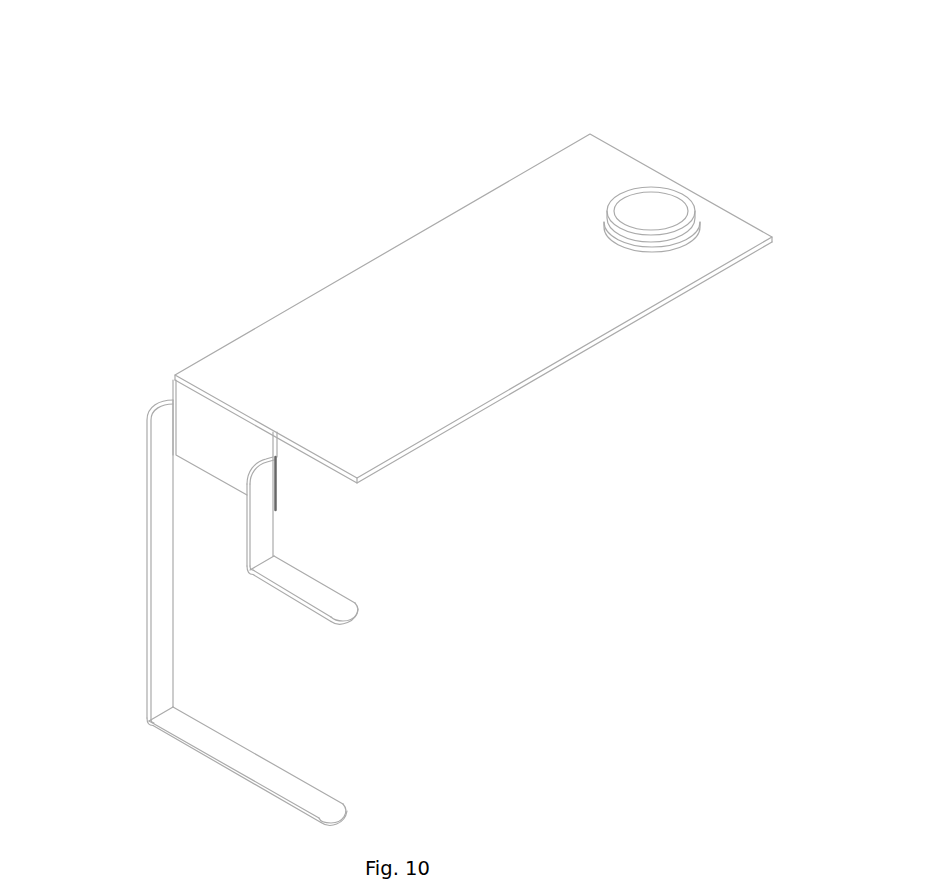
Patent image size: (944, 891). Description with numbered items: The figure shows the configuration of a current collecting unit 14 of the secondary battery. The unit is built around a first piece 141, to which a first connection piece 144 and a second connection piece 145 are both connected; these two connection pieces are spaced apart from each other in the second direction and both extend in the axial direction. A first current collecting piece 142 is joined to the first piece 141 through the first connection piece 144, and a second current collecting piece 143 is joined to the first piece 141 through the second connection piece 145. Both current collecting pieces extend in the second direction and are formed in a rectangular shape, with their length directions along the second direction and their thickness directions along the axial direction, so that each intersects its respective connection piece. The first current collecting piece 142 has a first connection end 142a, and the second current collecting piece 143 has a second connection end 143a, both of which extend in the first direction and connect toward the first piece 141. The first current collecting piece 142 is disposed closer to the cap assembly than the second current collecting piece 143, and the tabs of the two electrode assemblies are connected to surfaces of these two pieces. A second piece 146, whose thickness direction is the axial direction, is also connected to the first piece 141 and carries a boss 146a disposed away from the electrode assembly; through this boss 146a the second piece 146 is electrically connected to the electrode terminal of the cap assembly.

The current collecting unit 14 is at (452, 28).
The second piece 146 is at (420, 280).
The boss 146a is at (655, 207).
The first piece 141 is at (212, 438).
The second connection piece 145 is at (160, 558).
The first connection piece 144 is at (260, 530).
The first current collecting piece 142 is at (328, 603).
The first connection end 142a is at (250, 570).
The second current collecting piece 143 is at (290, 792).
The second connection end 143a is at (151, 723).